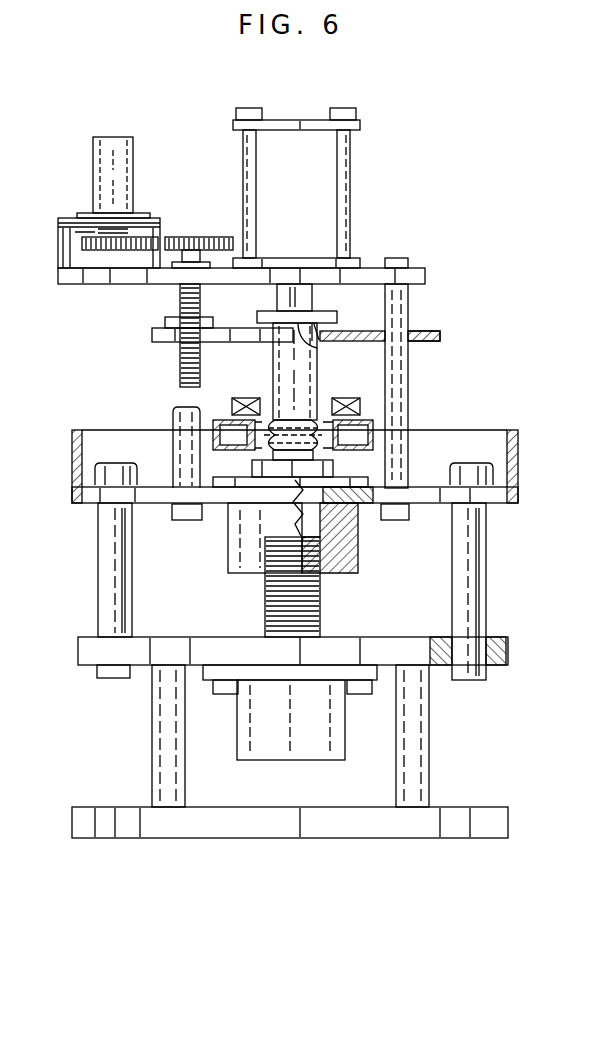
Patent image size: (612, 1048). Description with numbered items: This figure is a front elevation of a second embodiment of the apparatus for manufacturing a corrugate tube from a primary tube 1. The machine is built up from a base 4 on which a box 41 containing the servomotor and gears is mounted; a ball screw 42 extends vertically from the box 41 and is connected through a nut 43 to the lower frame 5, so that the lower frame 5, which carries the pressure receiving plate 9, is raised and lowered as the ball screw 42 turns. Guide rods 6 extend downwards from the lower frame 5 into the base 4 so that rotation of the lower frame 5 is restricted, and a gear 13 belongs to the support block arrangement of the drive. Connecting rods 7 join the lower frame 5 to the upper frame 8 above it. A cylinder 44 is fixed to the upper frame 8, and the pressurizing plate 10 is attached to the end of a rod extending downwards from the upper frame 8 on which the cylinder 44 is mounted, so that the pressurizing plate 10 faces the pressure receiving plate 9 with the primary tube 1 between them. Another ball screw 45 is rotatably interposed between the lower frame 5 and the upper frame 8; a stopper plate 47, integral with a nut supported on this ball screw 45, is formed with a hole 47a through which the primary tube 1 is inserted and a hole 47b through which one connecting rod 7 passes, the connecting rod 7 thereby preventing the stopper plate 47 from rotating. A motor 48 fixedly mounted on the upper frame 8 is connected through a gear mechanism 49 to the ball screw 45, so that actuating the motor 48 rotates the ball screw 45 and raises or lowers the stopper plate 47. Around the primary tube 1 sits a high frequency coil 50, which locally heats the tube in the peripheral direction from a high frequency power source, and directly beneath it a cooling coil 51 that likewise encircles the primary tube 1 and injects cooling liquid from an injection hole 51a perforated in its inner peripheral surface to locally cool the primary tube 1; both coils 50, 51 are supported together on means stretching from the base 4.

The primary tube 1 is at (273, 361).
The base 4 is at (78, 654).
The lower frame 5 is at (72, 483).
The guide rods 6 is at (96, 578).
The connecting rods 7 is at (408, 366).
The upper frame 8 is at (58, 274).
The pressure receiving plate 9 is at (333, 468).
The pressurizing plate 10 is at (335, 314).
The gear 13 is at (165, 323).
The box 41 is at (237, 750).
The ball screw 42 is at (265, 607).
The nut 43 is at (350, 555).
The cylinder 44 is at (345, 169).
The ball screw 45 is at (180, 357).
The stopper plate 47 is at (439, 336).
The hole 47a is at (319, 342).
The hole 47b is at (410, 331).
The motor 48 is at (117, 137).
The gear mechanism 49 is at (179, 237).
The high frequency coil 50 is at (345, 400).
The cooling coil 51 is at (373, 432).
The injection hole 51a is at (258, 404).